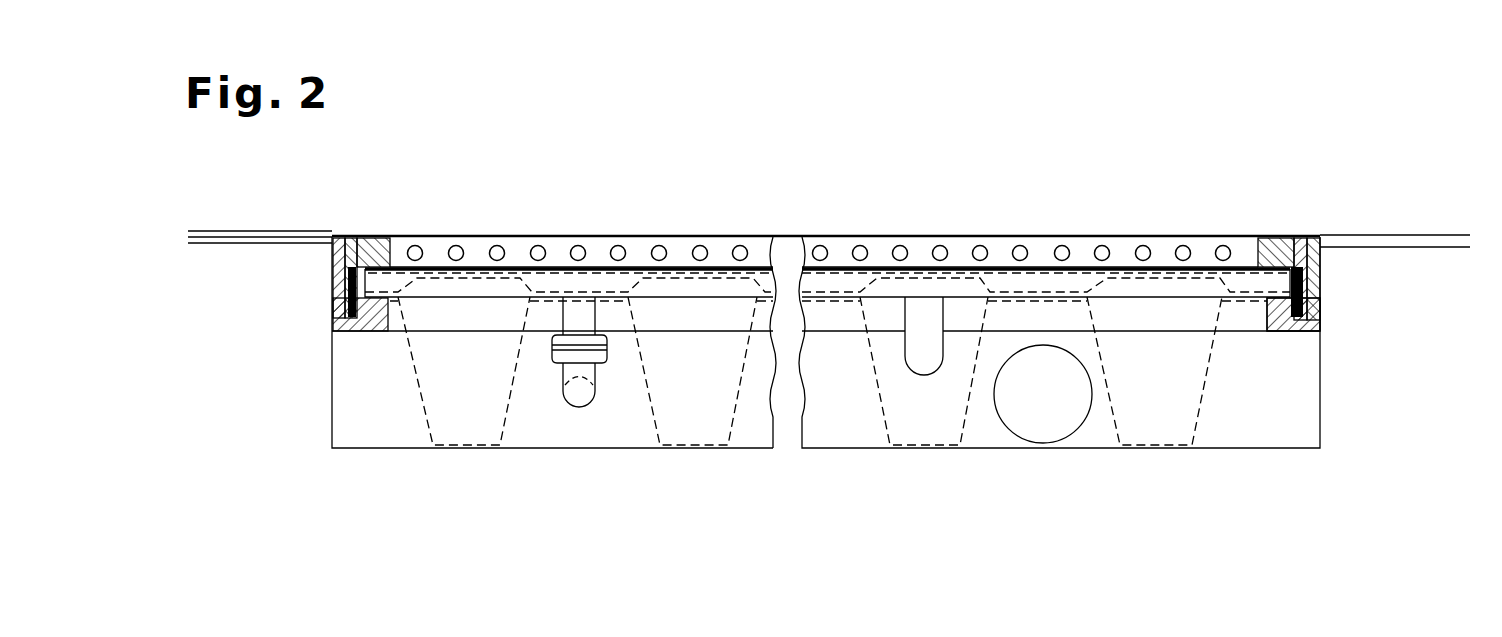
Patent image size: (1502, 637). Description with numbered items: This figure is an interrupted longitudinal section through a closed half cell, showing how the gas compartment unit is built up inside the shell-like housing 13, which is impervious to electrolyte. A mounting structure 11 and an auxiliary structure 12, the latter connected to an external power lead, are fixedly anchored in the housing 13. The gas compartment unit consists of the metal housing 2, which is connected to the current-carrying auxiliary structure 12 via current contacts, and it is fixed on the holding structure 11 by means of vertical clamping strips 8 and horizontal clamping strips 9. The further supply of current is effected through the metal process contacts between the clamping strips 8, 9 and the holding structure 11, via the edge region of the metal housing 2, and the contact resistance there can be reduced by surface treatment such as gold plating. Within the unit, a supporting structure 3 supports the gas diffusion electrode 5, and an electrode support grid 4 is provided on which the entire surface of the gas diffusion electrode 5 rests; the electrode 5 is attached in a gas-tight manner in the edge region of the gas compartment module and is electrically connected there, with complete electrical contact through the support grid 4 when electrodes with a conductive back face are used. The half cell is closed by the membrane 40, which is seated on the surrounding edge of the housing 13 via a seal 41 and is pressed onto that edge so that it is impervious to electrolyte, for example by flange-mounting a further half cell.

The metal housing 2 is at (470, 297).
The supporting structure 3 is at (1102, 297).
The electrode support grid 4 is at (830, 268).
The gas diffusion electrode 5 is at (1200, 268).
The vertical clamping strips 8 is at (1320, 263).
The horizontal clamping strips 9 is at (1125, 252).
The mounting structure 11 is at (1320, 318).
The auxiliary structure 12 is at (512, 381).
The housing 13 is at (1099, 447).
The membrane 40 is at (826, 217).
The seal 41 is at (1436, 244).